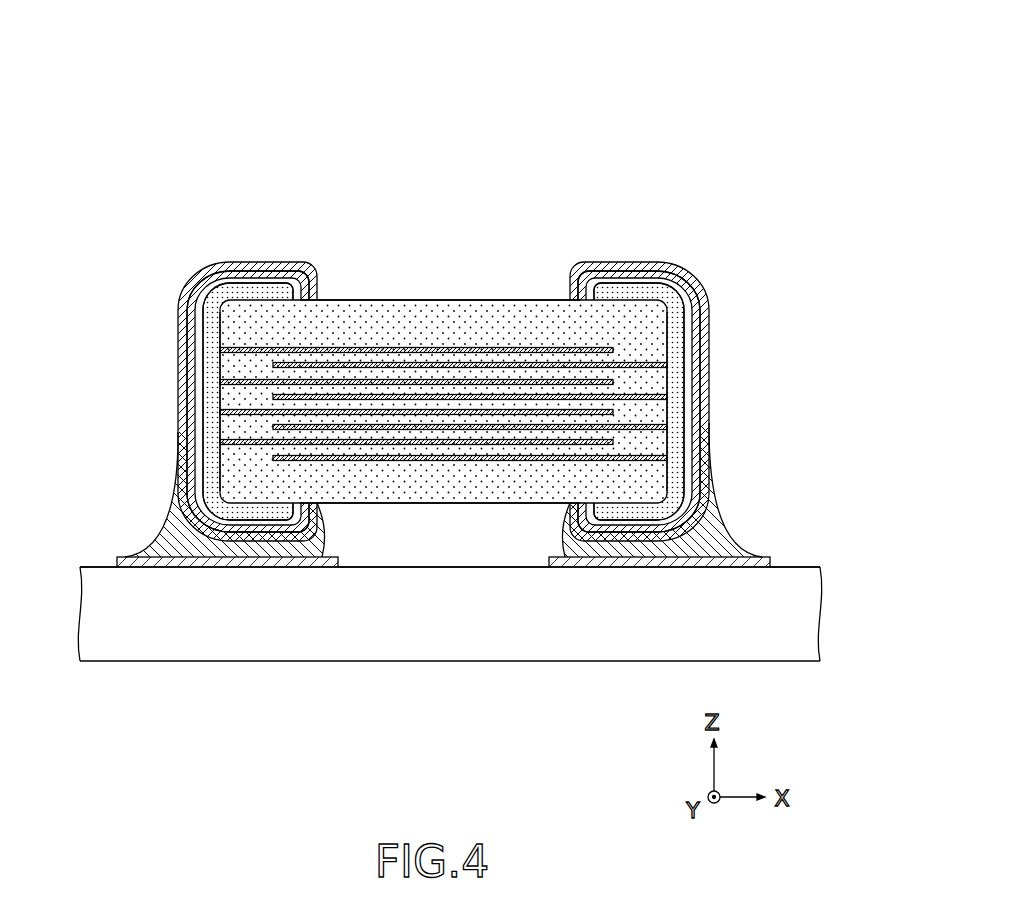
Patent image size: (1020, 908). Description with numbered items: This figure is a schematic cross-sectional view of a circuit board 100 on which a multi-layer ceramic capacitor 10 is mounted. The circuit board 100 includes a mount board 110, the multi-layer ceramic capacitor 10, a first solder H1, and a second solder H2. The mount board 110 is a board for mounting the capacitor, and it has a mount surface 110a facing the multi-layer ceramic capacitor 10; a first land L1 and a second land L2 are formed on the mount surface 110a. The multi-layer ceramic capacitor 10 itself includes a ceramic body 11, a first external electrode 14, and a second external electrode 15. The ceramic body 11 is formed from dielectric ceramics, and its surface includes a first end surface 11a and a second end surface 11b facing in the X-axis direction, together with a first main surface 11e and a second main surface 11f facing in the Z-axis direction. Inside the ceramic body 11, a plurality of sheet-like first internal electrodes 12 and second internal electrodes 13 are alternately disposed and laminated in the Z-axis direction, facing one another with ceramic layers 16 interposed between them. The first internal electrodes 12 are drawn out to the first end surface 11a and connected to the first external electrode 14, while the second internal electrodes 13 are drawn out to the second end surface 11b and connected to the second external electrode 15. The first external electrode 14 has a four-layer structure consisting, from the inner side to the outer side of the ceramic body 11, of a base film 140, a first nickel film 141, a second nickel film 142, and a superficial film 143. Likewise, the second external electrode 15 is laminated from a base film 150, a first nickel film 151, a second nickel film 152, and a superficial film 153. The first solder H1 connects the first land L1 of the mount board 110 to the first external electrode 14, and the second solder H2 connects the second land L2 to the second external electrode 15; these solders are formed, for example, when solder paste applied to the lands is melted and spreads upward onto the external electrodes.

The circuit board 100 is at (633, 89).
The multi-layer ceramic capacitor 10 is at (172, 168).
The ceramic body 11 is at (441, 369).
The first end surface 11a is at (218, 402).
The second end surface 11b is at (670, 417).
The first main surface 11e is at (413, 298).
The second main surface 11f is at (398, 505).
The first internal electrodes 12 is at (343, 443).
The second internal electrodes 13 is at (488, 458).
The ceramic layers 16 is at (468, 436).
The first external electrode 14 is at (235, 355).
The base film 140 is at (209, 370).
The first nickel film 141 is at (210, 297).
The second nickel film 142 is at (258, 274).
The superficial film 143 is at (303, 266).
The second external electrode 15 is at (646, 355).
The base film 150 is at (703, 278).
The first nickel film 151 is at (677, 297).
The second nickel film 152 is at (624, 273).
The superficial film 153 is at (611, 370).
The mount board 110 is at (181, 664).
The mount surface 110a is at (98, 564).
The first land L1 is at (132, 554).
The second land L2 is at (760, 556).
The first solder H1 is at (168, 483).
The second solder H2 is at (727, 504).